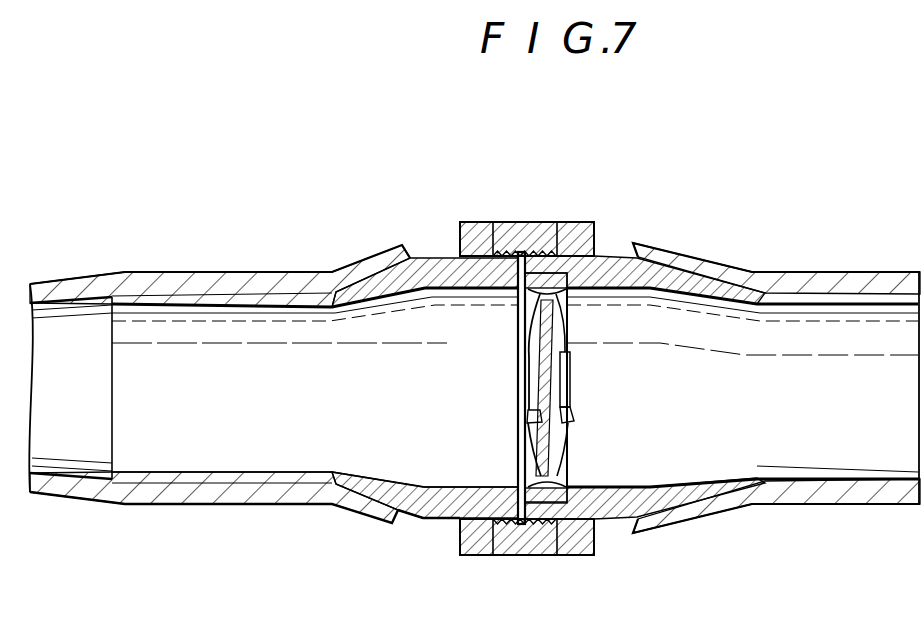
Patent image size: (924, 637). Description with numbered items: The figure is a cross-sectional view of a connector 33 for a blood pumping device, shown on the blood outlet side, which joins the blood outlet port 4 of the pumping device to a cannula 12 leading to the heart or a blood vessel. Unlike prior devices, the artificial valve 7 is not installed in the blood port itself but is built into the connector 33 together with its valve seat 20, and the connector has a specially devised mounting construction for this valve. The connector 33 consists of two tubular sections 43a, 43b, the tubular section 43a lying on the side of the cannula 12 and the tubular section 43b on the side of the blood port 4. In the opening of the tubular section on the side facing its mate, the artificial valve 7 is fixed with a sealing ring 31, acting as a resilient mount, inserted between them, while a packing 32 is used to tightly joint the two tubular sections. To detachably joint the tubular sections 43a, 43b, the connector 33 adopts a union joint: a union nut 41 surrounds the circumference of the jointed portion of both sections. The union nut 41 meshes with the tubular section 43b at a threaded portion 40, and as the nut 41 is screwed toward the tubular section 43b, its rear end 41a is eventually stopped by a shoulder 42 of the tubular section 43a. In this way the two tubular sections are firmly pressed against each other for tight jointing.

The blood outlet port 4 is at (802, 288).
The artificial valve 7 is at (576, 379).
The cannula 12 is at (247, 281).
The valve seat 20 is at (569, 307).
The sealing ring 31 is at (603, 258).
The packing 32 is at (522, 250).
The connector 33 is at (548, 378).
The threaded portion 40 is at (560, 244).
The union nut 41 is at (590, 248).
The rear end of union nut 41a is at (461, 260).
The shoulder 42 is at (490, 252).
The tubular section 43a is at (372, 292).
The tubular section 43b is at (778, 308).